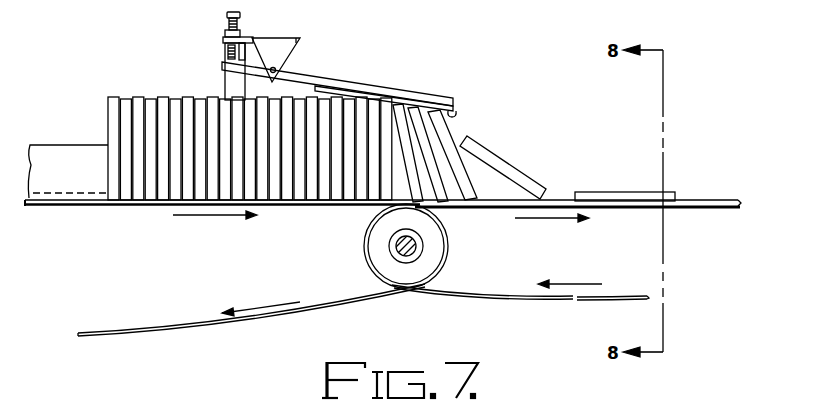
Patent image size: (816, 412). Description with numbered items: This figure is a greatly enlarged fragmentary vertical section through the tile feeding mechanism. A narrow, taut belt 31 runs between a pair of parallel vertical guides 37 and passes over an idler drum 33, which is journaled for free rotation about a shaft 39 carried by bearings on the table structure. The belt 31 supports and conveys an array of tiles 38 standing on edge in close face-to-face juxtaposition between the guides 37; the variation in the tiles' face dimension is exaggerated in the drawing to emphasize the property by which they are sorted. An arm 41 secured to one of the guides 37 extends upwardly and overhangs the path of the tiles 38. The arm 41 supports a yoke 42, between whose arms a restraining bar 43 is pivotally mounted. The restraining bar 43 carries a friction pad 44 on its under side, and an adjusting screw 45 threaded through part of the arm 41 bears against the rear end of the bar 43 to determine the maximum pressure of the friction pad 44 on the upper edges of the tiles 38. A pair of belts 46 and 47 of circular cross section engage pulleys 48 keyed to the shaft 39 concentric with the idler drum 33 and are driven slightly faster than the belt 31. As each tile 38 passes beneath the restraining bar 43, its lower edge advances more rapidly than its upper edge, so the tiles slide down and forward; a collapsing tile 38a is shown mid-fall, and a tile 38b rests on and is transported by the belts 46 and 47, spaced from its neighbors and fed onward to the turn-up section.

The belt 31 is at (128, 208).
The idler drum 33 is at (441, 248).
The vertical guides 37 is at (92, 145).
The tiles 38 is at (190, 97).
The collapsing tile 38a is at (513, 165).
The tile resting on belts 38b is at (596, 192).
The shaft 39 is at (417, 247).
The arm 41 is at (225, 78).
The yoke 42 is at (288, 60).
The restraining bar 43 is at (385, 85).
The friction pad 44 is at (455, 113).
The adjusting screw 45 is at (227, 52).
The belt 46 is at (617, 210).
The belt 47 is at (715, 210).
The pulleys 48 is at (372, 266).